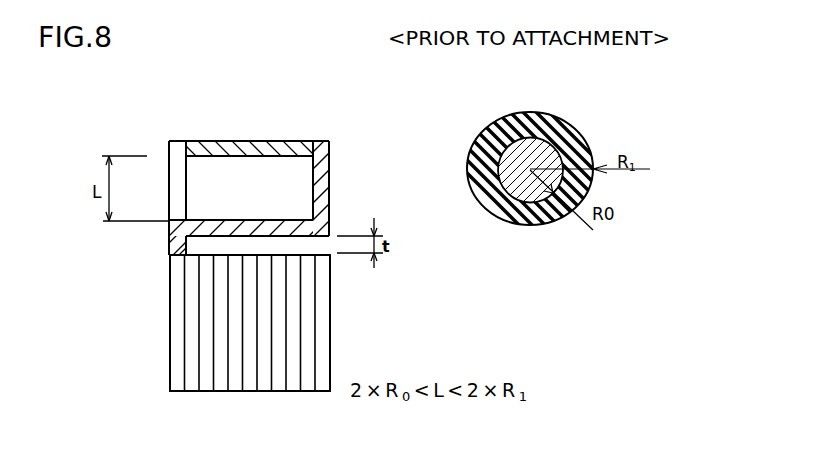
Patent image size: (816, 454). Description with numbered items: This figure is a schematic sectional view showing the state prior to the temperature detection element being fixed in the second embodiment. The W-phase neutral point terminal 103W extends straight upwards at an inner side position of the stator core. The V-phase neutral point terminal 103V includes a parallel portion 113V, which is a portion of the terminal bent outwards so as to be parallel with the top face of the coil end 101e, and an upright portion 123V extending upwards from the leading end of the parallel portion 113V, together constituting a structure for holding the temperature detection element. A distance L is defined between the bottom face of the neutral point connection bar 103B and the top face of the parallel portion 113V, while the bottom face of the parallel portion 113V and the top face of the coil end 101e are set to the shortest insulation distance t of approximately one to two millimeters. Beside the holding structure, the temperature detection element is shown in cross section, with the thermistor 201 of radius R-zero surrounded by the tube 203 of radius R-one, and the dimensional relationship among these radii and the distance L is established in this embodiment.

The W-phase neutral point terminal 103W is at (168, 148).
The neutral point connection bar 103B is at (209, 150).
The parallel portion 113V is at (253, 228).
The upright portion 123V is at (323, 195).
The V-phase neutral point terminal 103V is at (168, 247).
The coil end 101e is at (178, 330).
The tube 203 is at (528, 127).
The thermistor 201 is at (527, 198).